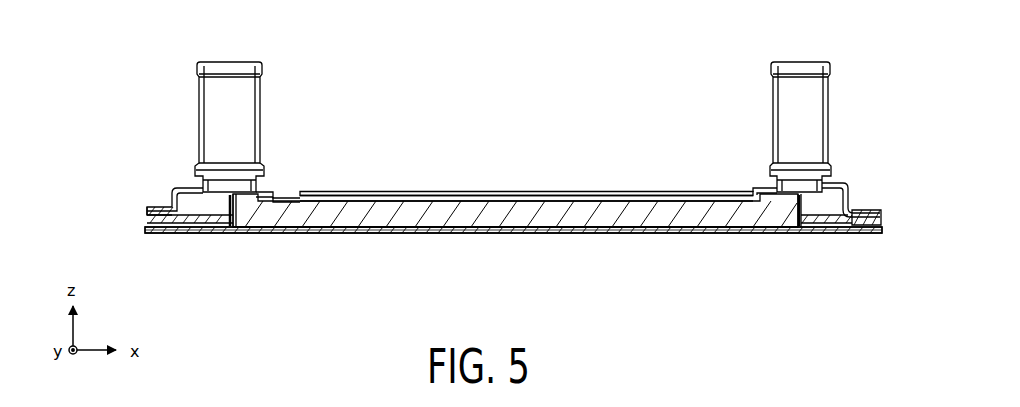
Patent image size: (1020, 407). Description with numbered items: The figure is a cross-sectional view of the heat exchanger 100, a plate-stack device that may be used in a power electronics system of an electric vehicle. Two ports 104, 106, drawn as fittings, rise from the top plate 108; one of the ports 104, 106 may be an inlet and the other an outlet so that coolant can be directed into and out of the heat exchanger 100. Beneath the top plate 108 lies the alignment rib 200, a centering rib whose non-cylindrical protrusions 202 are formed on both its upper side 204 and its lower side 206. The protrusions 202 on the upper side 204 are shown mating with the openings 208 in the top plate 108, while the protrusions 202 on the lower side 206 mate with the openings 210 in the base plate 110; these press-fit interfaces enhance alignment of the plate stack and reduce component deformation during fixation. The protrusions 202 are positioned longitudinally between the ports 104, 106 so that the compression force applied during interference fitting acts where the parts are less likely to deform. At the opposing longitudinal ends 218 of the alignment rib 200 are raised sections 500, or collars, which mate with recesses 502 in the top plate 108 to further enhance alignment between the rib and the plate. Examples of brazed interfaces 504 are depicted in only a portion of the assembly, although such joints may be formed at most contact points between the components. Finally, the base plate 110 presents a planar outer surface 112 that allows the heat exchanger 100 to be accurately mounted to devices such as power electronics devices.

The heat exchanger 100 is at (117, 88).
The port 104 is at (188, 74).
The port 106 is at (768, 76).
The top plate 108 is at (478, 178).
The base plate 110 is at (475, 256).
The planar outer surface 112 is at (633, 236).
The alignment rib 200 is at (442, 190).
The non-cylindrical alignment protrusions 202 is at (334, 190).
The upper side 204 is at (374, 180).
The lower side 206 is at (358, 241).
The openings 208 is at (336, 186).
The openings 210 is at (290, 243).
The longitudinal ends 218 is at (202, 187).
The raised sections 500 is at (262, 188).
The recesses 502 is at (234, 229).
The brazed interfaces 504 is at (872, 208).